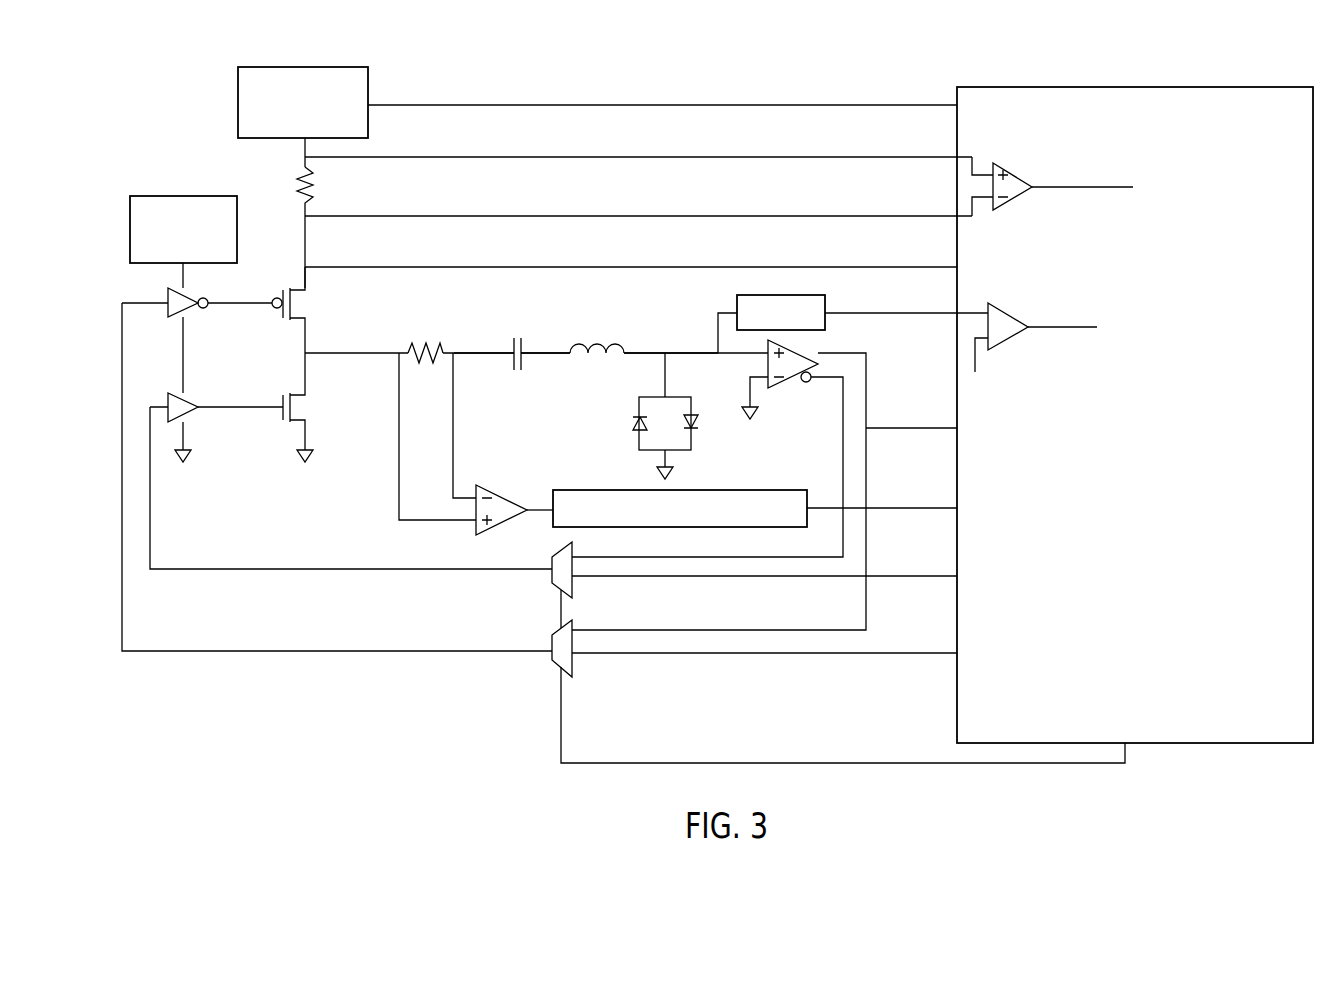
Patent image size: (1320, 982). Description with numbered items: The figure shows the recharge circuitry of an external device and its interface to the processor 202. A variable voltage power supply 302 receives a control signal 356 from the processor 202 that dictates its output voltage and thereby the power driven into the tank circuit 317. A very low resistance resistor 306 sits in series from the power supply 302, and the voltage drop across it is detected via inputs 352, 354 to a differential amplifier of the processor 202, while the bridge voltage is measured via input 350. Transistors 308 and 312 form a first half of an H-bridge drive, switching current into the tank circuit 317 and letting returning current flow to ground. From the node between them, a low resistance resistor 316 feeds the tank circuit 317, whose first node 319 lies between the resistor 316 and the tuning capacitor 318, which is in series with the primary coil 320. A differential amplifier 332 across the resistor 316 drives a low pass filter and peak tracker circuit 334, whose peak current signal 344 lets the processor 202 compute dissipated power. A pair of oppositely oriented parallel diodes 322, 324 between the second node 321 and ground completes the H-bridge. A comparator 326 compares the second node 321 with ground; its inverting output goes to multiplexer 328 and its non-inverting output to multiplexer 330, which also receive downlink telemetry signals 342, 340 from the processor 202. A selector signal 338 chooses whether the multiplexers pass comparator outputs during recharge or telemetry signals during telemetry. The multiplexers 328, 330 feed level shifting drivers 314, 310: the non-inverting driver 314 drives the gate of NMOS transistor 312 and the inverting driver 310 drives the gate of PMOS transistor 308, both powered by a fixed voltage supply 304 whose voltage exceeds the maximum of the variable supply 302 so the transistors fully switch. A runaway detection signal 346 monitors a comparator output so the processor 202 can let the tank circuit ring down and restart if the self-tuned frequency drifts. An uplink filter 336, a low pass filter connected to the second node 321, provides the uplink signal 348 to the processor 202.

The processor 202 is at (1021, 87).
The variable voltage power supply 302 is at (369, 79).
The fixed voltage supply 304 is at (162, 196).
The resistor 306 is at (338, 184).
The transistor 308 is at (305, 303).
The driver 310 is at (168, 296).
The transistor 312 is at (306, 407).
The driver 314 is at (168, 410).
The resistor 316 is at (441, 351).
The tank circuit 317 is at (560, 346).
The tuning capacitor 318 is at (514, 337).
The first node 319 is at (478, 352).
The primary coil 320 is at (590, 343).
The second node 321 is at (648, 352).
The diode 322 is at (633, 423).
The diode 324 is at (698, 423).
The comparator 326 is at (790, 350).
The multiplexer 328 is at (550, 578).
The multiplexer 330 is at (550, 660).
The differential amplifier 332 is at (503, 497).
The low pass filter and peak tracker circuit 334 is at (708, 527).
The uplink filter 336 is at (825, 296).
The selector signal 338 is at (927, 765).
The telemetry downlink signal 340 is at (728, 655).
The telemetry downlink signal 342 is at (897, 578).
The peak current signal 344 is at (886, 510).
The runaway detection signal 346 is at (900, 430).
The uplink signal 348 is at (900, 314).
The bridge voltage input 350 is at (832, 267).
The input 352 is at (835, 216).
The input 354 is at (845, 157).
The control signal 356 is at (878, 105).